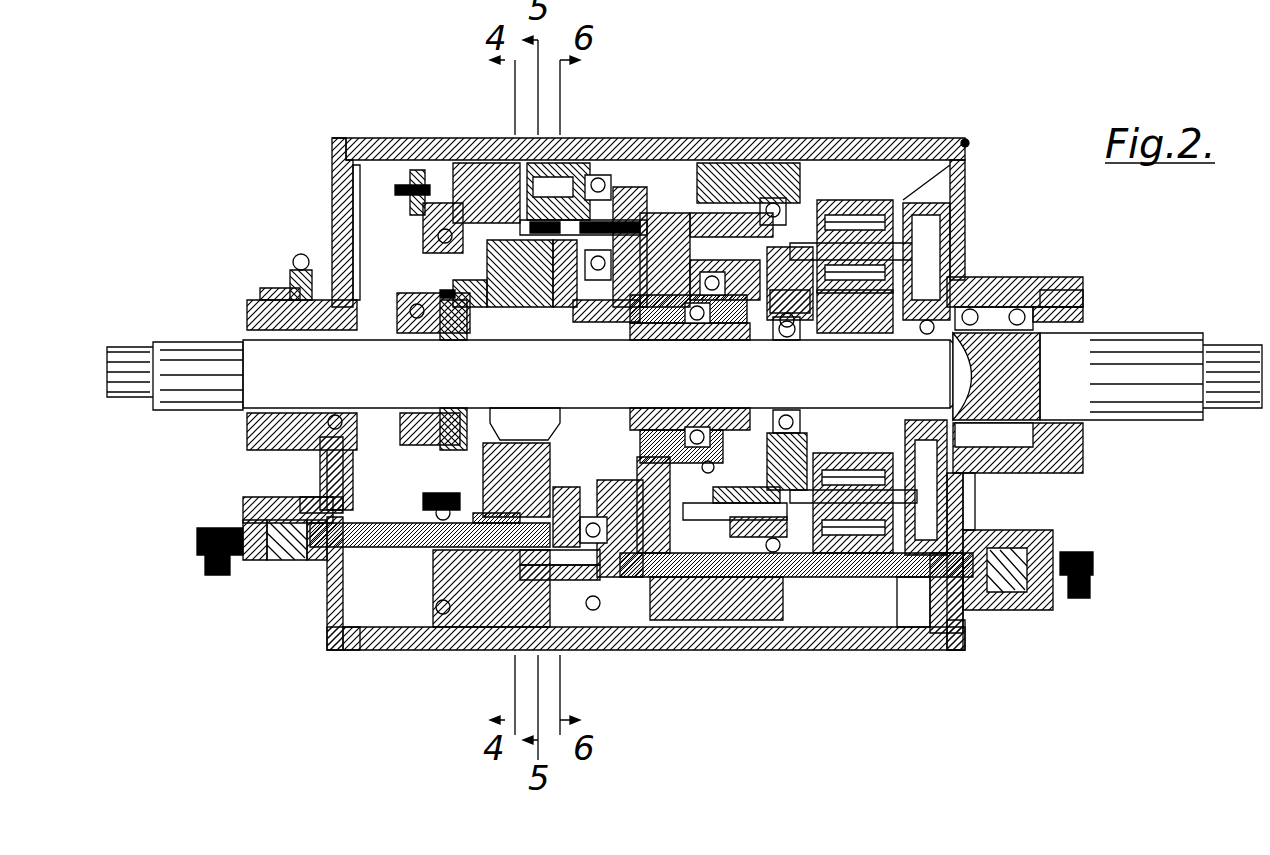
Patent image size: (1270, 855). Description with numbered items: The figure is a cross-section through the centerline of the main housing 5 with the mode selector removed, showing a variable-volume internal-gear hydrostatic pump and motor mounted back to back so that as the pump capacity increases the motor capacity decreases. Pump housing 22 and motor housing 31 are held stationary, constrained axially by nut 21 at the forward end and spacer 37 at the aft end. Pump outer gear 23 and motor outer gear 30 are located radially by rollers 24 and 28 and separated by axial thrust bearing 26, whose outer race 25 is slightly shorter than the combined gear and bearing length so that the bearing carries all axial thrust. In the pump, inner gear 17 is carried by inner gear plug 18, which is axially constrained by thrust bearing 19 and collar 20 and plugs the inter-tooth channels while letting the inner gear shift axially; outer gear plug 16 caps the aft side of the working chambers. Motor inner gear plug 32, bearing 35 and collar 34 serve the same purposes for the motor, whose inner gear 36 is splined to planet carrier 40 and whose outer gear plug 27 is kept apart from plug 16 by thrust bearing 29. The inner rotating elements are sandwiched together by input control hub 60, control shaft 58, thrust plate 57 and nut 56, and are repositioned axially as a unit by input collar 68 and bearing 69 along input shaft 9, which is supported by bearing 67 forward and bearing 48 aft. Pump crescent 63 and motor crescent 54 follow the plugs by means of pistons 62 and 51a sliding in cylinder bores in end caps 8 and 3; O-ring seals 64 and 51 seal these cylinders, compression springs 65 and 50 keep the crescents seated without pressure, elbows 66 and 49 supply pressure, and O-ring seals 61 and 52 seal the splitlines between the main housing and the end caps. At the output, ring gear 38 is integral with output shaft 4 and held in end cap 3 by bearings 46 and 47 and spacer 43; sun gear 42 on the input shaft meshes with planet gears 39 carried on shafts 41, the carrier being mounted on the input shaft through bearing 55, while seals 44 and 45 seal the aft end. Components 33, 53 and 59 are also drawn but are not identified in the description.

The end cap 3 is at (1040, 420).
The output shaft 4 is at (1125, 340).
The main housing 5 is at (760, 625).
The end cap 8 is at (345, 645).
The input shaft 9 is at (205, 342).
The outer gear plug 16 is at (295, 272).
The pump inner gear 17 is at (335, 300).
The inner gear plug 18 is at (335, 268).
The axial thrust bearing 19 is at (350, 232).
The collar 20 is at (348, 148).
The nut 21 is at (412, 205).
The pump housing 22 is at (440, 225).
The pump outer gear 23 is at (475, 175).
The rollers 24 is at (505, 240).
The bearing outer race 25 is at (590, 170).
The axial thrust bearing 26 is at (605, 178).
The motor outer gear plug 27 is at (612, 250).
The rollers 28 is at (645, 222).
The axial thrust bearing 29 is at (650, 215).
The motor outer gear 30 is at (700, 200).
The motor housing 31 is at (745, 163).
The motor inner gear plug 32 is at (760, 205).
The bearing 33 is at (780, 198).
The collar 34 is at (800, 245).
The bearing 35 is at (830, 243).
The motor inner gear 36 is at (870, 205).
The spacer 37 is at (925, 205).
The ring gear 38 is at (962, 170).
The planet gears 39 is at (960, 230).
The planet carrier 40 is at (935, 255).
The shafts 41 is at (940, 280).
The sun gear 42 is at (960, 292).
The spacer 43 is at (995, 315).
The seal 44 is at (1045, 315).
The seal 45 is at (1060, 300).
The bearing 46 is at (1080, 455).
The bearing 47 is at (1010, 475).
The bearing 48 is at (968, 480).
The elbow 49 is at (1093, 562).
The compression spring 50 is at (1035, 608).
The O-ring seal 51 is at (985, 608).
The piston 51a is at (960, 640).
The O-ring seal 52 is at (940, 635).
The support 53 is at (905, 630).
The motor crescent 54 is at (860, 625).
The bearing 55 is at (812, 565).
The nut 56 is at (700, 540).
The thrust plate 57 is at (685, 560).
The control shaft 58 is at (612, 580).
The gear 59 is at (470, 630).
The input control hub 60 is at (440, 545).
The O-ring seal 61 is at (345, 600).
The piston 62 is at (255, 560).
The pump crescent 63 is at (310, 565).
The O-ring seal 64 is at (312, 545).
The compression spring 65 is at (275, 560).
The elbow 66 is at (200, 545).
The bearing 67 is at (320, 460).
The input collar 68 is at (415, 450).
The bearing 69 is at (412, 440).